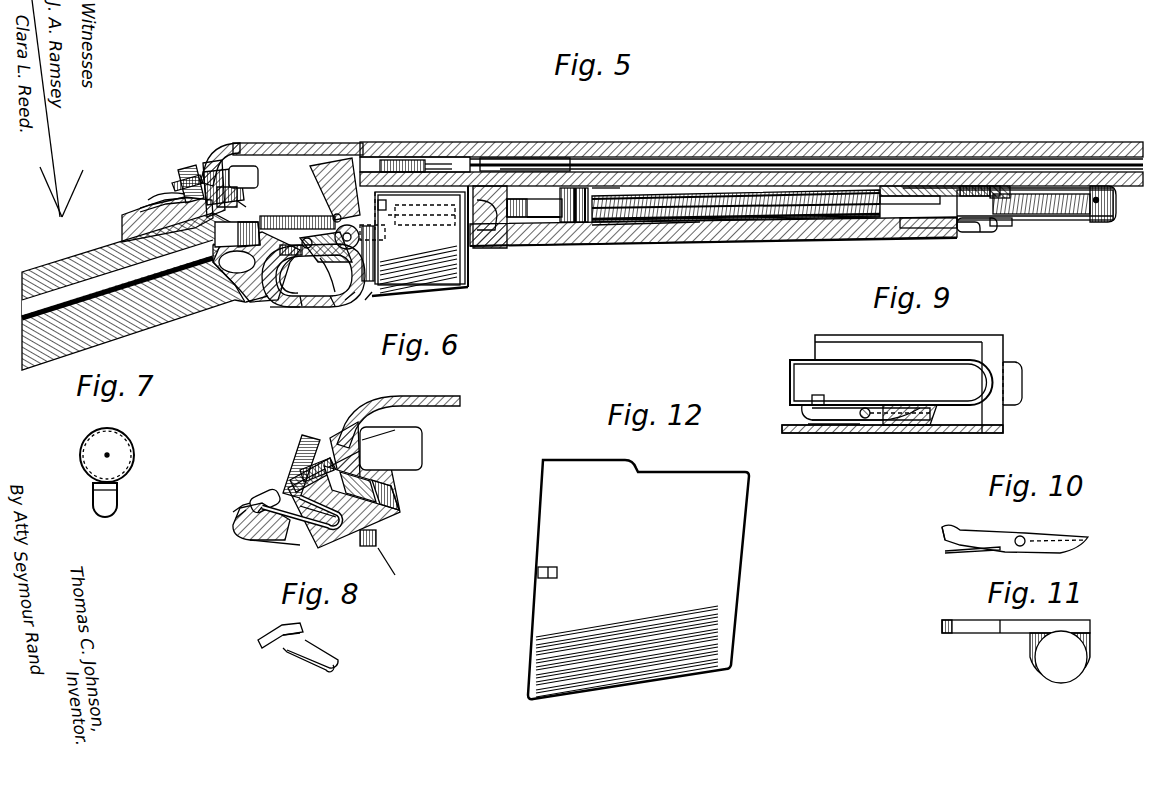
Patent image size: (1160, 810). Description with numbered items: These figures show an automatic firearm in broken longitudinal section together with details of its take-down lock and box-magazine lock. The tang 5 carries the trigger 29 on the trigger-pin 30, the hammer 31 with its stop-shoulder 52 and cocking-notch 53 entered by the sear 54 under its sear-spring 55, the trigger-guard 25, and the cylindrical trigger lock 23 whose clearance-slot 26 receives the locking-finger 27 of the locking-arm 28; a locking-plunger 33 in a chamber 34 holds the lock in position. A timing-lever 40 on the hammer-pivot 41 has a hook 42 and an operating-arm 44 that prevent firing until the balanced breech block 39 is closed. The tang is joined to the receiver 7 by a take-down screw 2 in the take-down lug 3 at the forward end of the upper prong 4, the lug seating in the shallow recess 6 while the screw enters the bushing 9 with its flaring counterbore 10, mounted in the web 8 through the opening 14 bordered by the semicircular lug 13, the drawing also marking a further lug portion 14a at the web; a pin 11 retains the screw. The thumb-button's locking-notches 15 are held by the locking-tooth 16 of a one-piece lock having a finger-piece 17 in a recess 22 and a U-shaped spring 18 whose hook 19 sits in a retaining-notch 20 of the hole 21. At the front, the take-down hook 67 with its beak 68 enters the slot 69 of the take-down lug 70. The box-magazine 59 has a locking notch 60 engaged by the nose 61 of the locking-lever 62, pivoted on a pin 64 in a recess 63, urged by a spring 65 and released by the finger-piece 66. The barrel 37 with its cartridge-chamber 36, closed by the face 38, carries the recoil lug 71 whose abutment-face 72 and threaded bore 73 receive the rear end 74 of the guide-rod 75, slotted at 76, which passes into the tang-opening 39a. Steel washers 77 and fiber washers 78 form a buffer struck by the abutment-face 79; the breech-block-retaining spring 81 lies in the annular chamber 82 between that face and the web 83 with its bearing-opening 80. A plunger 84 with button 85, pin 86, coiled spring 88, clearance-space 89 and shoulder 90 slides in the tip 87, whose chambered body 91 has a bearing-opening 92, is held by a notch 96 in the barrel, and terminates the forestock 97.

In FIG. 5, the take-down screw 2 is at (178, 185).
In FIG. 6, the take-down screw 2 is at (300, 474).
In FIG. 7, the take-down screw 2 is at (88, 462).
In FIG. 5, the take-down lug 3 is at (205, 168).
In FIG. 6, the take-down lug 3 is at (326, 440).
In FIG. 5, the upper prong 4 is at (160, 204).
In FIG. 6, the upper prong 4 is at (245, 506).
In FIG. 5, the tang 5 is at (250, 262).
In FIG. 6, the tang 5 is at (350, 540).
In FIG. 9, the tang 5 is at (890, 433).
In FIG. 5, the shallow recess 6 is at (212, 160).
In FIG. 6, the shallow recess 6 is at (348, 424).
In FIG. 5, the receiver 7 is at (270, 143).
In FIG. 6, the receiver 7 is at (432, 396).
In FIG. 5, the web or bridge 8 is at (258, 186).
In FIG. 6, the web or bridge 8 is at (395, 470).
In FIG. 5, the bushing 9 is at (262, 200).
In FIG. 6, the bushing 9 is at (398, 492).
In FIG. 5, the flaring counterbore 10 is at (223, 183).
In FIG. 6, the flaring counterbore 10 is at (391, 448).
In FIG. 5, the pin 11 is at (248, 207).
In FIG. 6, the pin 11 is at (392, 482).
In FIG. 5, the semicircular lug 13 is at (370, 240).
In FIG. 6, the semicircular lug 13 is at (376, 540).
In FIG. 6, the opening 14 is at (395, 432).
In FIG. 6, the lug 14a is at (399, 569).
In FIG. 5, the locking-notches 15 is at (190, 170).
In FIG. 6, the locking-notches 15 is at (310, 437).
In FIG. 7, the locking-notches 15 is at (98, 470).
In FIG. 8, the locking-tooth 16 is at (300, 626).
In FIG. 7, the locking-tooth 16 is at (95, 496).
In FIG. 5, the finger-piece 17 is at (160, 195).
In FIG. 6, the finger-piece 17 is at (258, 496).
In FIG. 8, the finger-piece 17 is at (268, 634).
In FIG. 7, the finger-piece 17 is at (117, 497).
In FIG. 6, the U-shaped spring 18 is at (290, 530).
In FIG. 8, the U-shaped spring 18 is at (338, 660).
In FIG. 6, the hook 19 is at (262, 528).
In FIG. 8, the hook 19 is at (300, 660).
In FIG. 6, the retaining-notch 20 is at (250, 538).
In FIG. 5, the chamber or hole 21 is at (215, 232).
In FIG. 6, the chamber or hole 21 is at (312, 528).
In FIG. 5, the recess 22 is at (142, 210).
In FIG. 6, the recess 22 is at (236, 524).
In FIG. 5, the trigger lock 23 is at (325, 276).
In FIG. 5, the trigger-guard 25 is at (352, 296).
In FIG. 5, the clearance-slot 26 is at (374, 250).
In FIG. 5, the locking-finger 27 is at (420, 228).
In FIG. 5, the locking-arm 28 is at (302, 306).
In FIG. 5, the trigger 29 is at (296, 275).
In FIG. 5, the trigger-pin 30 is at (320, 216).
In FIG. 5, the hammer 31 is at (335, 189).
In FIG. 5, the locking-plunger 33 is at (405, 286).
In FIG. 5, the chamber 34 is at (372, 292).
In FIG. 5, the cartridge-chamber 36 is at (517, 160).
In FIG. 5, the barrel 37 is at (632, 142).
In FIG. 5, the face 38 is at (458, 142).
In FIG. 5, the balanced breech block 39 is at (405, 160).
In FIG. 5, the tang-opening 39a is at (610, 226).
In FIG. 5, the timing-lever 40 is at (375, 222).
In FIG. 5, the hammer-pivot 41 is at (347, 229).
In FIG. 5, the hook 42 is at (335, 306).
In FIG. 5, the operating-arm 44 is at (450, 280).
In FIG. 5, the stop-shoulder 52 is at (352, 160).
In FIG. 5, the cocking-notch 53 is at (316, 242).
In FIG. 5, the sear 54 is at (300, 307).
In FIG. 5, the sear-spring 55 is at (262, 296).
In FIG. 5, the box-magazine 59 is at (462, 206).
In FIG. 12, the box-magazine 59 is at (638, 579).
In FIG. 9, the box-magazine 59 is at (790, 378).
In FIG. 5, the locking notch 60 is at (392, 298).
In FIG. 12, the locking notch 60 is at (548, 567).
In FIG. 9, the locking notch 60 is at (818, 395).
In FIG. 9, the nose 61 is at (812, 398).
In FIG. 10, the nose 61 is at (942, 528).
In FIG. 9, the locking-lever 62 is at (846, 408).
In FIG. 10, the locking-lever 62 is at (990, 533).
In FIG. 11, the locking-lever 62 is at (980, 633).
In FIG. 9, the recess 63 is at (848, 422).
In FIG. 9, the pin 64 is at (870, 410).
In FIG. 9, the spring 65 is at (812, 425).
In FIG. 10, the spring 65 is at (965, 552).
In FIG. 11, the finger-piece 66 is at (1040, 664).
In FIG. 5, the combined magazine-guide and take-down hook 67 is at (450, 216).
In FIG. 5, the beak 68 is at (490, 225).
In FIG. 5, the slot 69 is at (540, 220).
In FIG. 5, the take-down lug 70 is at (530, 220).
In FIG. 5, the recoil-taking and guide-rod lug 71 is at (545, 160).
In FIG. 5, the recoil abutment-face 72 is at (565, 158).
In FIG. 5, the threaded bore 73 is at (492, 190).
In FIG. 5, the rear end of guide-rod 74 is at (566, 225).
In FIG. 5, the guide-rod 75 is at (690, 222).
In FIG. 5, the screw-driver slot 76 is at (850, 236).
In FIG. 5, the steel washers 77 is at (578, 225).
In FIG. 5, the fiber washers 78 is at (586, 225).
In FIG. 5, the abutment-face 79 is at (720, 246).
In FIG. 5, the bearing-opening 80 is at (800, 230).
In FIG. 5, the breech-block-retaining spring 81 is at (640, 224).
In FIG. 5, the annular chamber 82 is at (762, 245).
In FIG. 5, the web 83 is at (890, 190).
In FIG. 5, the plunger 84 is at (1050, 216).
In FIG. 5, the button 85 is at (1112, 205).
In FIG. 5, the pin 86 is at (1095, 204).
In FIG. 5, the cap-like band or tip 87 is at (990, 230).
In FIG. 5, the coiled spring 88 is at (1020, 222).
In FIG. 5, the clearance-space 89 is at (915, 196).
In FIG. 5, the external shoulder 90 is at (992, 186).
In FIG. 5, the chambered body 91 is at (968, 232).
In FIG. 5, the bearing-opening 92 is at (1000, 216).
In FIG. 5, the notch 96 is at (970, 186).
In FIG. 5, the forestock 97 is at (920, 232).